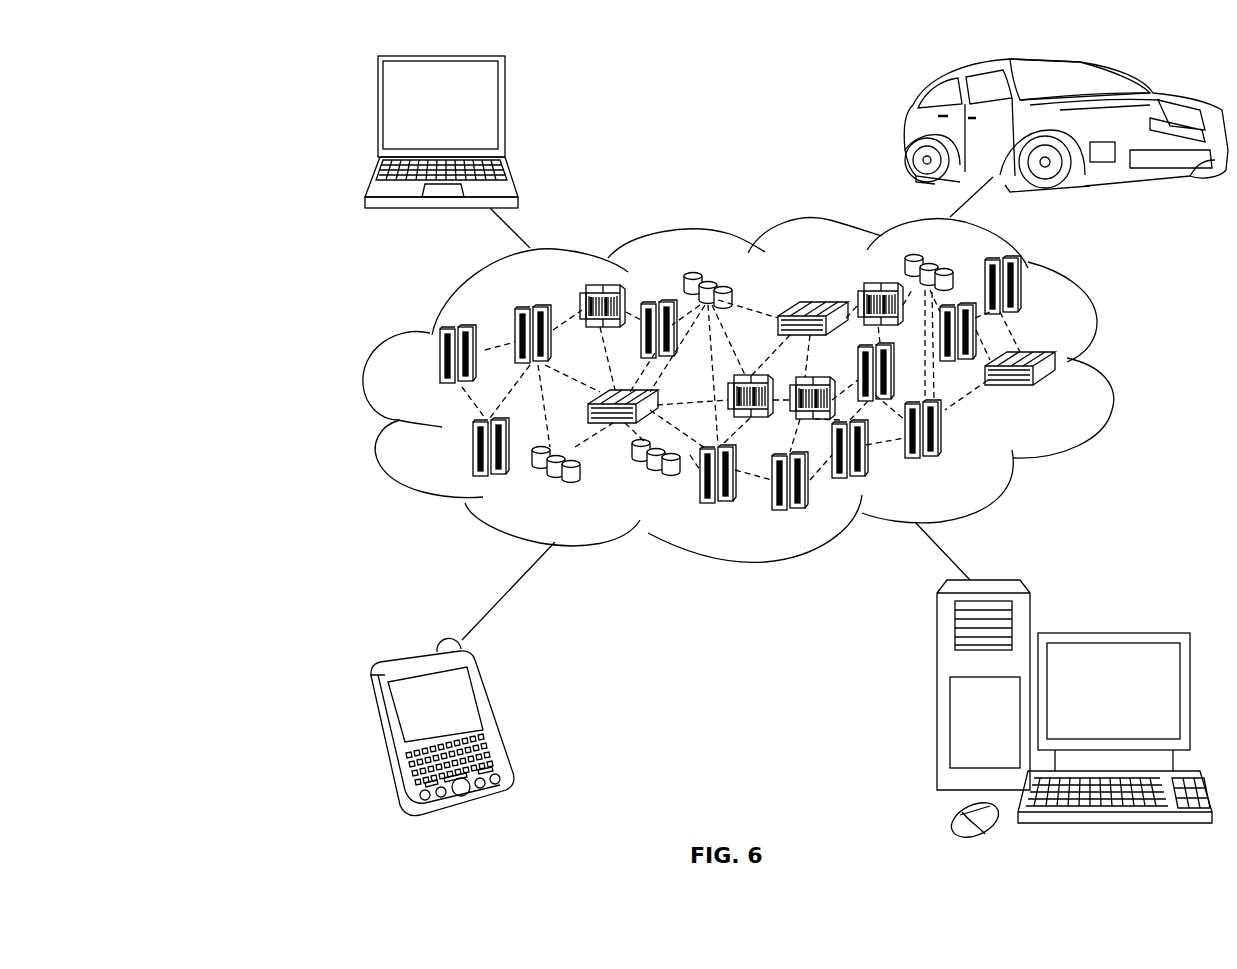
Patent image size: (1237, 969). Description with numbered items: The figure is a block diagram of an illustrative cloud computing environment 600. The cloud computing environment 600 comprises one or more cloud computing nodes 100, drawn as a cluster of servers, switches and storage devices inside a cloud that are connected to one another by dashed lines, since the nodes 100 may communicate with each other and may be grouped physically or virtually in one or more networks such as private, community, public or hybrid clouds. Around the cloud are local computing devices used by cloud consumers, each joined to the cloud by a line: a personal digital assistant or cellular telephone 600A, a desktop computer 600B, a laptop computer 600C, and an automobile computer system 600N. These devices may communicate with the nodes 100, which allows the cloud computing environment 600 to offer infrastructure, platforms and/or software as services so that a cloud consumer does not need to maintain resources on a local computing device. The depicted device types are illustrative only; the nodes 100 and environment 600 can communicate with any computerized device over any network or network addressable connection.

The cloud computing environment 600 is at (263, 58).
The cloud computing nodes 100 is at (1060, 395).
The laptop computer 600C is at (506, 112).
The automobile computer system 600N is at (906, 125).
The personal digital assistant (PDA) or cellular telephone 600A is at (497, 718).
The desktop computer 600B is at (1112, 632).